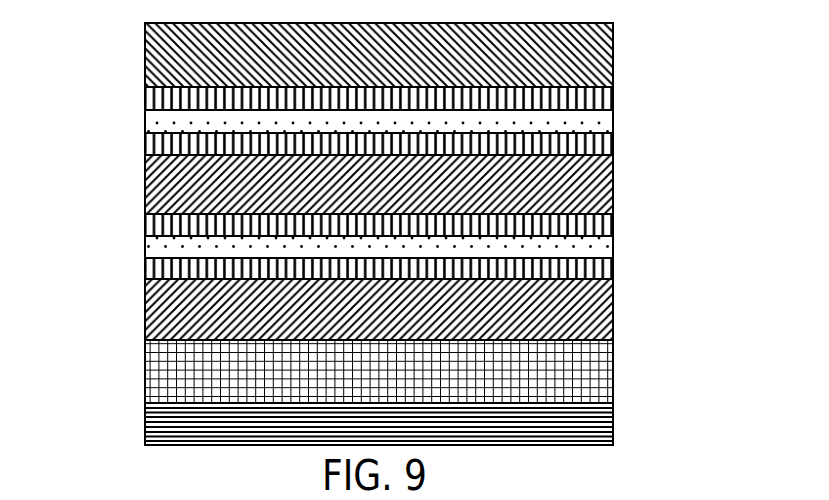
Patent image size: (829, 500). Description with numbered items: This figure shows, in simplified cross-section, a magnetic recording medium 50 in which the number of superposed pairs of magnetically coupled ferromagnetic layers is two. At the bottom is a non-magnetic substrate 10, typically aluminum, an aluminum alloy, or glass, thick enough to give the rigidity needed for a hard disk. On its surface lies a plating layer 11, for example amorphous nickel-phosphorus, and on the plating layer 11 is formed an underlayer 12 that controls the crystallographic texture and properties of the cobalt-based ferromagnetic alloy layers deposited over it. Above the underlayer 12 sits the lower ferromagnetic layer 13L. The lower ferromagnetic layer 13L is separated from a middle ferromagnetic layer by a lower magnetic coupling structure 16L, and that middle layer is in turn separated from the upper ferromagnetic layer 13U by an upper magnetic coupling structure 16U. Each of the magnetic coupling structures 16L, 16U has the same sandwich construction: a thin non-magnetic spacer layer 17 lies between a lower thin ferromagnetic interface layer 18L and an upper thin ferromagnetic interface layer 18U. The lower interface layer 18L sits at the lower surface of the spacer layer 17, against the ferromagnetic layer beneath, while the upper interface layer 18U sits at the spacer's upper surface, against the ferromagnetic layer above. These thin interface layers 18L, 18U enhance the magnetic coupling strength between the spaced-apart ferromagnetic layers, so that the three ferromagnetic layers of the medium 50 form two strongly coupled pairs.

The magnetic recording medium 50 is at (116, 121).
The upper ferromagnetic layer 13U is at (613, 47).
The upper thin ferromagnetic interface layer 18U is at (613, 93).
The thin non-magnetic spacer layer 17 is at (613, 118).
The lower thin ferromagnetic interface layer 18L is at (613, 143).
The upper magnetic coupling structure 16U is at (712, 78).
The lower magnetic coupling structure 16L is at (712, 210).
The lower ferromagnetic layer 13L is at (613, 310).
The underlayer 12 is at (613, 368).
The plating layer 11 is at (613, 403).
The non-magnetic substrate 10 is at (613, 430).